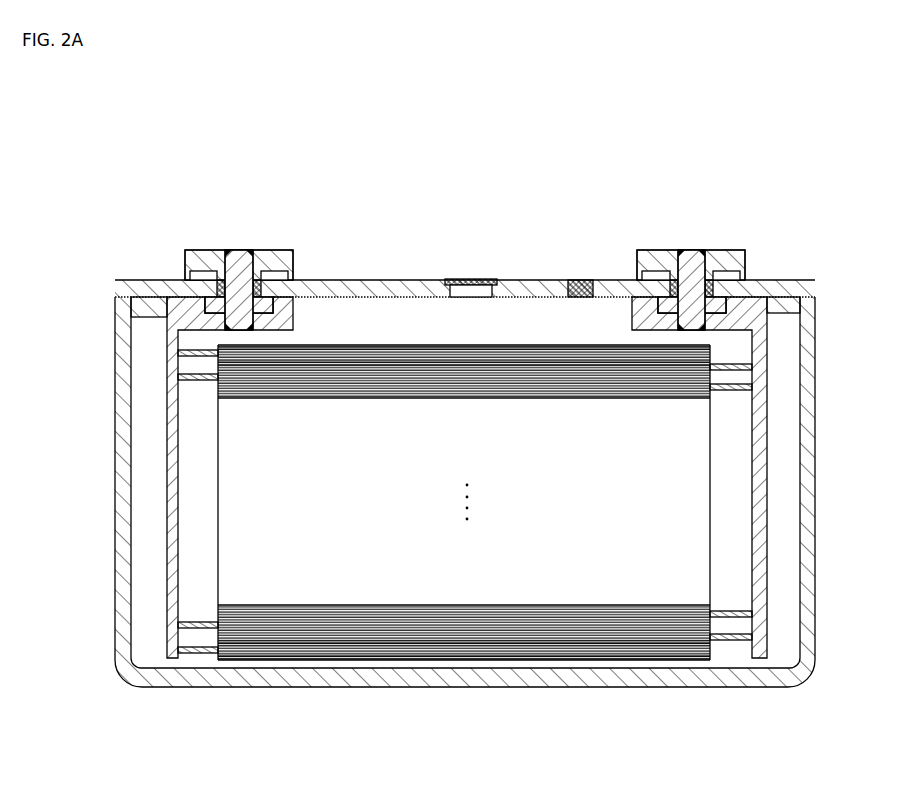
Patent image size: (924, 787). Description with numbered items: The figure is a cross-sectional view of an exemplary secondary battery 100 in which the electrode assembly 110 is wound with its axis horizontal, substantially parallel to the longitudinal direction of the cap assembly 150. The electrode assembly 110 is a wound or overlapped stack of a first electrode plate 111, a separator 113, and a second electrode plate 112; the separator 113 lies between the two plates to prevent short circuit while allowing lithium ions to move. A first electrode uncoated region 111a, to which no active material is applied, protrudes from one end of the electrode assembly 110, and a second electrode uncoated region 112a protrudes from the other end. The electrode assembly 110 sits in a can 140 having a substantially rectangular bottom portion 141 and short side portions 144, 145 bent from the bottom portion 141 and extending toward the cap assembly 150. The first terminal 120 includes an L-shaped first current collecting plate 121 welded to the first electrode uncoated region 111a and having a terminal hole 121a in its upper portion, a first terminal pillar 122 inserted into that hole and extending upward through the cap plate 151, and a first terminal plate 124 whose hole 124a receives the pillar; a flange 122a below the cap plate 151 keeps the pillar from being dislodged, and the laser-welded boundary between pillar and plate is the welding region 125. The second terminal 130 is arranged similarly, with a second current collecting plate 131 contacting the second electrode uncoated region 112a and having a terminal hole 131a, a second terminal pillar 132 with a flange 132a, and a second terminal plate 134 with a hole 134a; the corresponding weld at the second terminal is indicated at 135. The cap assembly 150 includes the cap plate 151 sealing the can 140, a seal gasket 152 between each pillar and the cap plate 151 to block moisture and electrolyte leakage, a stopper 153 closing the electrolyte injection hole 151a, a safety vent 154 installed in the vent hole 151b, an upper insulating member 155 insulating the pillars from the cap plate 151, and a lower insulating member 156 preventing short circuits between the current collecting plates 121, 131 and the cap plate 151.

The secondary battery 100 is at (815, 126).
The electrode assembly 110 is at (467, 546).
The first electrode plate 111 is at (290, 660).
The first electrode uncoated region 111a is at (200, 652).
The second electrode plate 112 is at (633, 660).
The second electrode uncoated region 112a is at (732, 640).
The separator 113 is at (483, 646).
The first terminal 120 is at (209, 401).
The first current collecting plate 121 is at (163, 423).
The terminal hole 121a is at (228, 331).
The first terminal pillar 122 is at (284, 262).
The flange 122a is at (276, 313).
The first terminal plate 124 is at (250, 259).
The hole 124a is at (274, 312).
The welding region 125 is at (252, 250).
The second terminal 130 is at (742, 402).
The second current collecting plate 131 is at (767, 423).
The terminal hole 131a is at (740, 342).
The second terminal pillar 132 is at (667, 261).
The flange 132a is at (650, 309).
The second terminal plate 134 is at (701, 259).
The hole 134a is at (710, 293).
The second welding portion 135 is at (703, 250).
The can 140 is at (474, 530).
The bottom portion 141 is at (380, 688).
The short side portion 144 is at (817, 537).
The short side portion 145 is at (115, 545).
The cap assembly 150 is at (468, 237).
The cap plate 151 is at (465, 285).
The electrolyte injection hole 151a is at (590, 299).
The vent hole 151b is at (465, 298).
The seal gasket 152 is at (217, 290).
The stopper 153 is at (580, 279).
The safety vent 154 is at (468, 279).
The upper insulating member 155 is at (215, 273).
The lower insulating member 156 is at (140, 316).